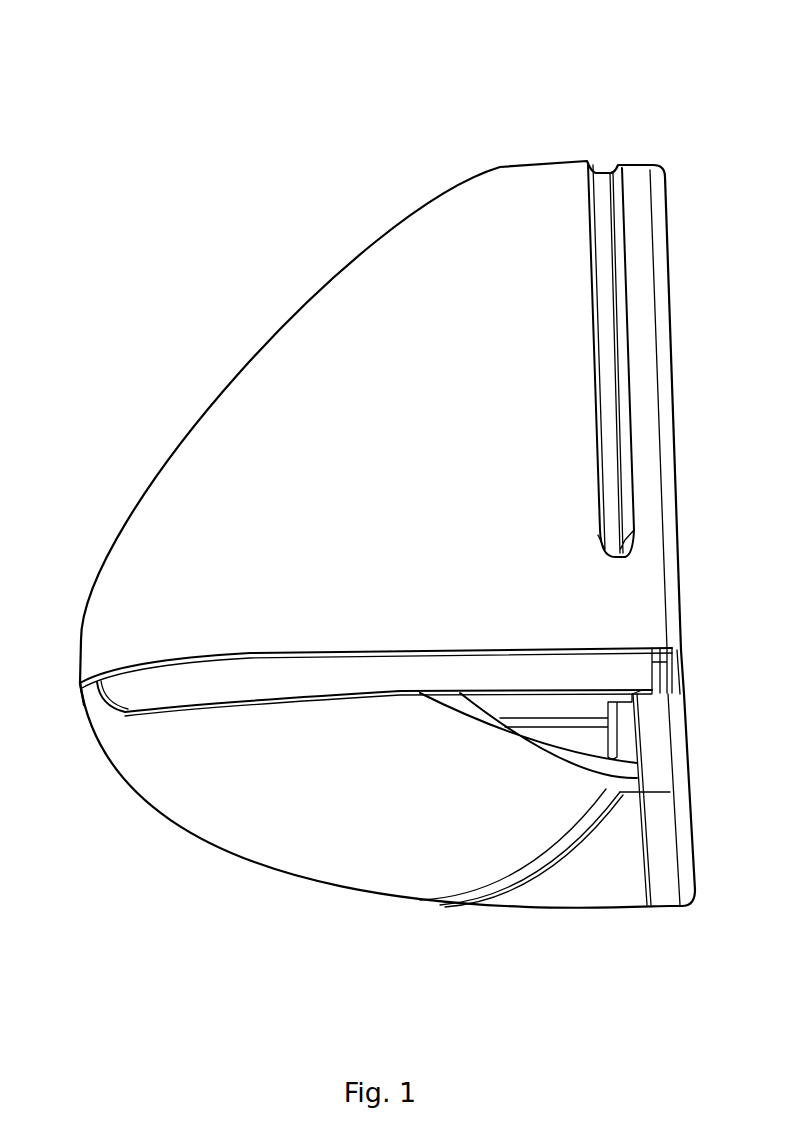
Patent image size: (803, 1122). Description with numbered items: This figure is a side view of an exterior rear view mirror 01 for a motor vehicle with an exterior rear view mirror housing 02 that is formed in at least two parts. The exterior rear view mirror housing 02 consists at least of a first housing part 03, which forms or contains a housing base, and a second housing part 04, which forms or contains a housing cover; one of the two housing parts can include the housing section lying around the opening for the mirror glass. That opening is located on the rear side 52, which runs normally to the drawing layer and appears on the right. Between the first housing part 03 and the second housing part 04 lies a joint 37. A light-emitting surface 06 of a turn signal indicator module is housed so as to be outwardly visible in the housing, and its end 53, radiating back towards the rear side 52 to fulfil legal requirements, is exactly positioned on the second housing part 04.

The exterior rear view mirror 01 is at (169, 146).
The exterior rear view mirror housing 02 is at (169, 828).
The first housing part 03 is at (358, 855).
The second housing part 04 is at (425, 252).
The light-emitting surface 06 is at (183, 692).
The joint 37 is at (78, 683).
The rear side 52 is at (692, 476).
The end of the light-emitting surface 53 is at (683, 667).